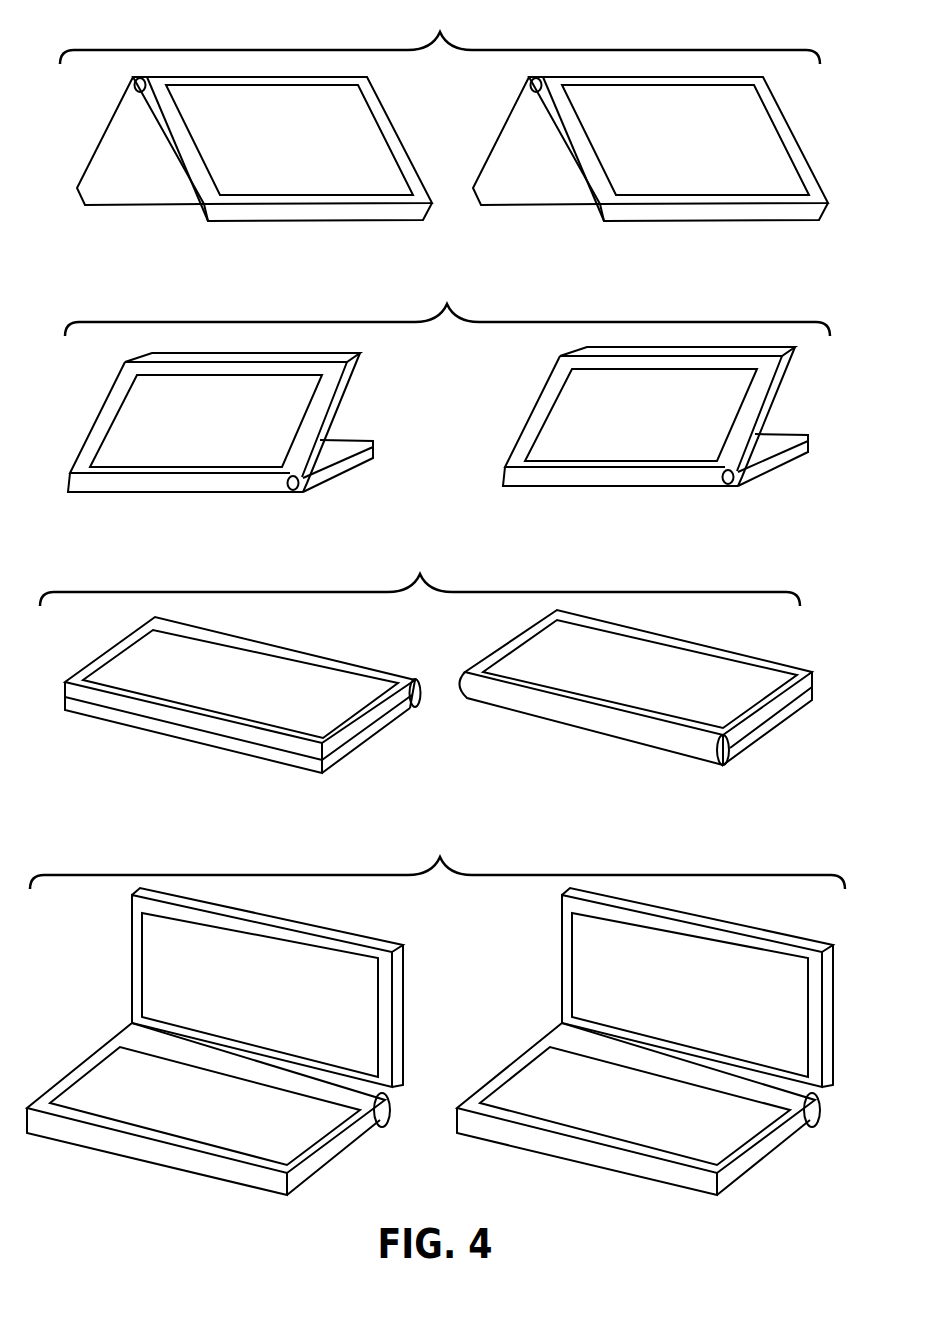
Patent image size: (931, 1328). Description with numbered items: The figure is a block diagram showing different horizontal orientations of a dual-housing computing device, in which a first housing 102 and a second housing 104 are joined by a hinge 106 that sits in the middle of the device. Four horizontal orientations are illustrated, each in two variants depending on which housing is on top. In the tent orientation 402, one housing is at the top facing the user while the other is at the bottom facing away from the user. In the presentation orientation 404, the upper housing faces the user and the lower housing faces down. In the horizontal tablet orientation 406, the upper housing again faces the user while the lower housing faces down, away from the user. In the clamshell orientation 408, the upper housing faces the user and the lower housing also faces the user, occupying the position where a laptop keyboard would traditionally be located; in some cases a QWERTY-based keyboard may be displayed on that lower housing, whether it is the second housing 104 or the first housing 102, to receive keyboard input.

The first housing 102 is at (275, 111).
The second housing 104 is at (650, 113).
The hinge 106 is at (419, 705).
The tent orientation 402 is at (543, 27).
The presentation orientation 404 is at (600, 299).
The horizontal tablet orientation 406 is at (598, 567).
The clamshell orientation 408 is at (572, 847).